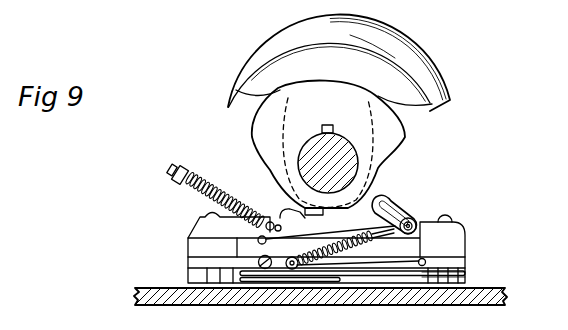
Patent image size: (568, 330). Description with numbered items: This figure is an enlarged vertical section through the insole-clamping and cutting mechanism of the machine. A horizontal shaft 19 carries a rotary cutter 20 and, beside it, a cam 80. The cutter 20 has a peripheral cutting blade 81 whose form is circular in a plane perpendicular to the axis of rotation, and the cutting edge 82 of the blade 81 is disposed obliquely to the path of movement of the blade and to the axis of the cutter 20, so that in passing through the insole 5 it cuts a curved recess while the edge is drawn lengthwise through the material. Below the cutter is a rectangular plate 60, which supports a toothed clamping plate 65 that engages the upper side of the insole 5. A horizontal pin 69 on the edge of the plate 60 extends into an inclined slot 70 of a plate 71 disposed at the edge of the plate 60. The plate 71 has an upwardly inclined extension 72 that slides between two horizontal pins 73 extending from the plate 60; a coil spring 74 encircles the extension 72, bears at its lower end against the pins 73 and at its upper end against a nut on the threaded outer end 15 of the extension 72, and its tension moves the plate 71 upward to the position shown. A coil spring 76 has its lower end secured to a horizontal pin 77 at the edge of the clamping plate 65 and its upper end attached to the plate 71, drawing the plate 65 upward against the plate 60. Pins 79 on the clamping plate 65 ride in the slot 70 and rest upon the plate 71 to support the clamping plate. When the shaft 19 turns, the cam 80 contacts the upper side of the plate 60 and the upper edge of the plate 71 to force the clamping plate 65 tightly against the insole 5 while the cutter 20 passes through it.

The insole 5 is at (508, 297).
The adjusting screw 15 is at (180, 167).
The horizontal shaft 19 is at (336, 128).
The rotary cutter 20 is at (390, 82).
The rectangular plate 60 is at (452, 232).
The clamping plate 65 is at (197, 262).
The horizontal pin 69 is at (410, 214).
The inclined slot 70 is at (397, 203).
The plate 71 is at (333, 218).
The upwardly inclined extension 72 is at (171, 167).
The horizontal pin 73 is at (270, 221).
The coil spring 74 is at (230, 192).
The coil spring 76 is at (342, 245).
The horizontal pin 77 is at (292, 270).
The horizontal pin 79 is at (416, 224).
The cam 80 is at (405, 137).
The peripheral cutting blade 81 is at (259, 60).
The cutting edge 82 is at (291, 32).